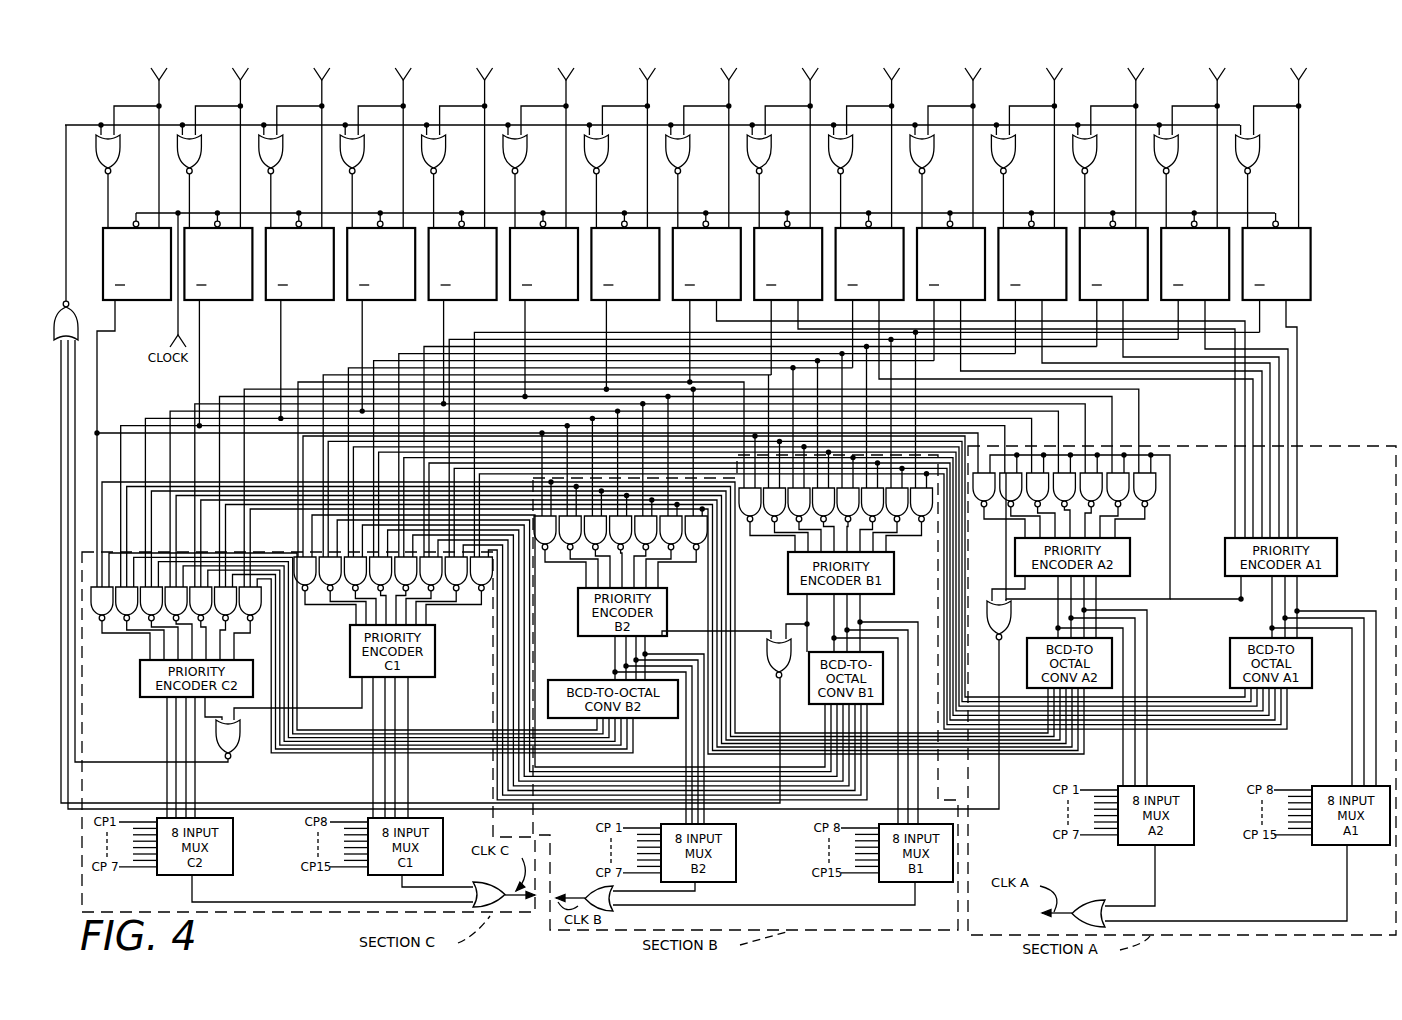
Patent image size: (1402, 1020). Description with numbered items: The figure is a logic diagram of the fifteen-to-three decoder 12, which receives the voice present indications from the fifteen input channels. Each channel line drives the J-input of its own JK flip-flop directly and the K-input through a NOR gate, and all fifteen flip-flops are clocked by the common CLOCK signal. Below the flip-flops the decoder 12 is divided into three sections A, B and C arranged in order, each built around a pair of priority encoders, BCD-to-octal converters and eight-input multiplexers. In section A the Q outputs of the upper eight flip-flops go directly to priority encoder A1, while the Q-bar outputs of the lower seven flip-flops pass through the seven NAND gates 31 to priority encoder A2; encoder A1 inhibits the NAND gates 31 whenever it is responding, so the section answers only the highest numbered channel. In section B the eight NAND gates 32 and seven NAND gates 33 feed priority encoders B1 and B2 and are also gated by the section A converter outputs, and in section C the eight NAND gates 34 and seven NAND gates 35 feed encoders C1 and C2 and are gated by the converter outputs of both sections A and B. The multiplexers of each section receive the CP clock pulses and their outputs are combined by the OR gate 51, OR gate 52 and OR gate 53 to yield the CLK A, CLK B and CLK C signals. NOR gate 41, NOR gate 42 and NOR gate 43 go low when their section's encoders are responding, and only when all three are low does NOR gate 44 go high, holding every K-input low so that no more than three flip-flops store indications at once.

The 15-to-3 decoder 12 is at (1326, 320).
The NAND gates 31 is at (1178, 493).
The NAND gates 32 is at (896, 550).
The NAND gates 33 is at (582, 576).
The NAND gates 34 is at (339, 616).
The NAND gates 35 is at (128, 649).
The NOR gate 41 is at (1012, 621).
The NOR gate 42 is at (768, 653).
The NOR gate 43 is at (236, 746).
The NOR gate 44 is at (79, 303).
The OR gate 51 is at (1094, 900).
The OR gate 52 is at (623, 907).
The OR gate 53 is at (482, 883).